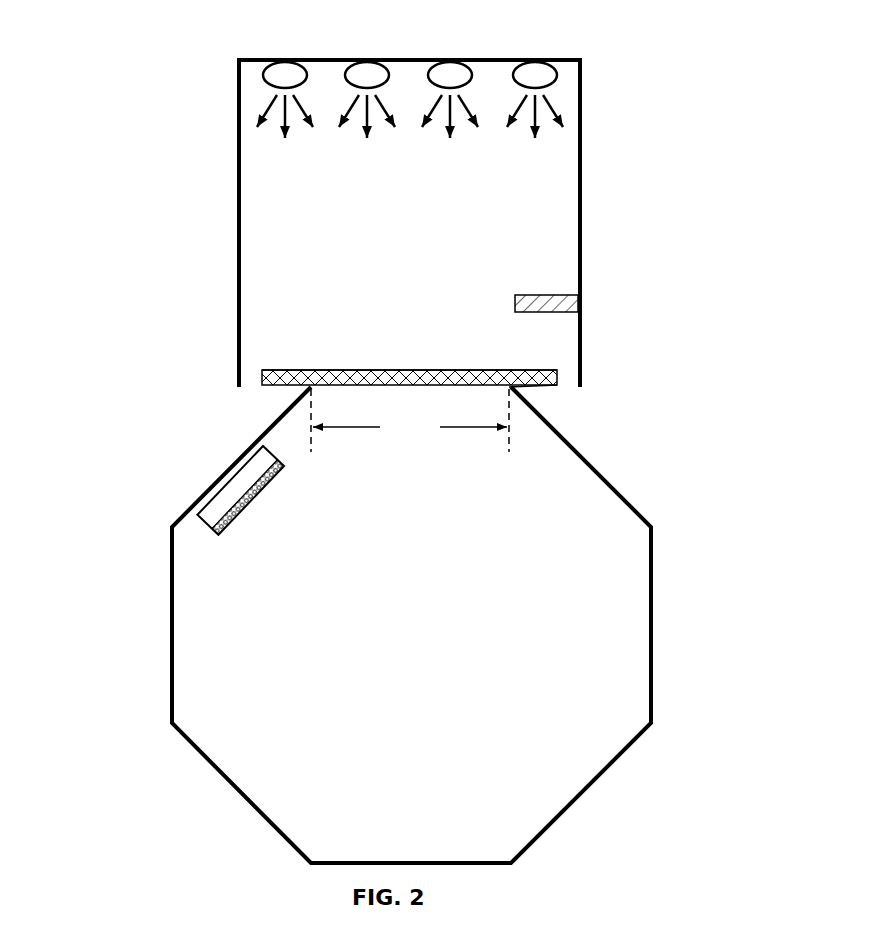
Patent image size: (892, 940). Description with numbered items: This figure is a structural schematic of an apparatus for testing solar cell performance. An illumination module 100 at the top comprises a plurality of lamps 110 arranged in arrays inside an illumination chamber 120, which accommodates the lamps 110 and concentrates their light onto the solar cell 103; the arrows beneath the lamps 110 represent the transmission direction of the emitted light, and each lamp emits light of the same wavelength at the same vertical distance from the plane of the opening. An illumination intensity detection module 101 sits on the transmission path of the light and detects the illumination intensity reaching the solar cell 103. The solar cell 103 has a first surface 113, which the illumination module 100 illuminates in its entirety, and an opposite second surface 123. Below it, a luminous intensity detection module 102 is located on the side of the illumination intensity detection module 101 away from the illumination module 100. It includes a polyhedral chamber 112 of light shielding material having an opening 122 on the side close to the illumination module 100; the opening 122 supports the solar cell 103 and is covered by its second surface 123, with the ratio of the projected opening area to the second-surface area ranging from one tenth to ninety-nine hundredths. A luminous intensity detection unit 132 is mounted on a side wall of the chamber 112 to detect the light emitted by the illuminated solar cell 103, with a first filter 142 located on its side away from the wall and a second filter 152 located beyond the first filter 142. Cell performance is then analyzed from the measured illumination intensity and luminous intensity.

The illumination module 100 is at (485, 207).
The lamps 110 is at (543, 73).
The illumination chamber 120 is at (581, 127).
The illumination intensity detection module 101 is at (558, 301).
The solar cell 103 is at (545, 374).
The first surface 113 is at (443, 369).
The opening 122 is at (410, 420).
The second surface 123 is at (534, 391).
The luminous intensity detection module 102 is at (345, 621).
The chamber 112 is at (170, 568).
The luminous intensity detection unit 132 is at (208, 502).
The first filter 142 is at (257, 483).
The second filter 152 is at (270, 462).